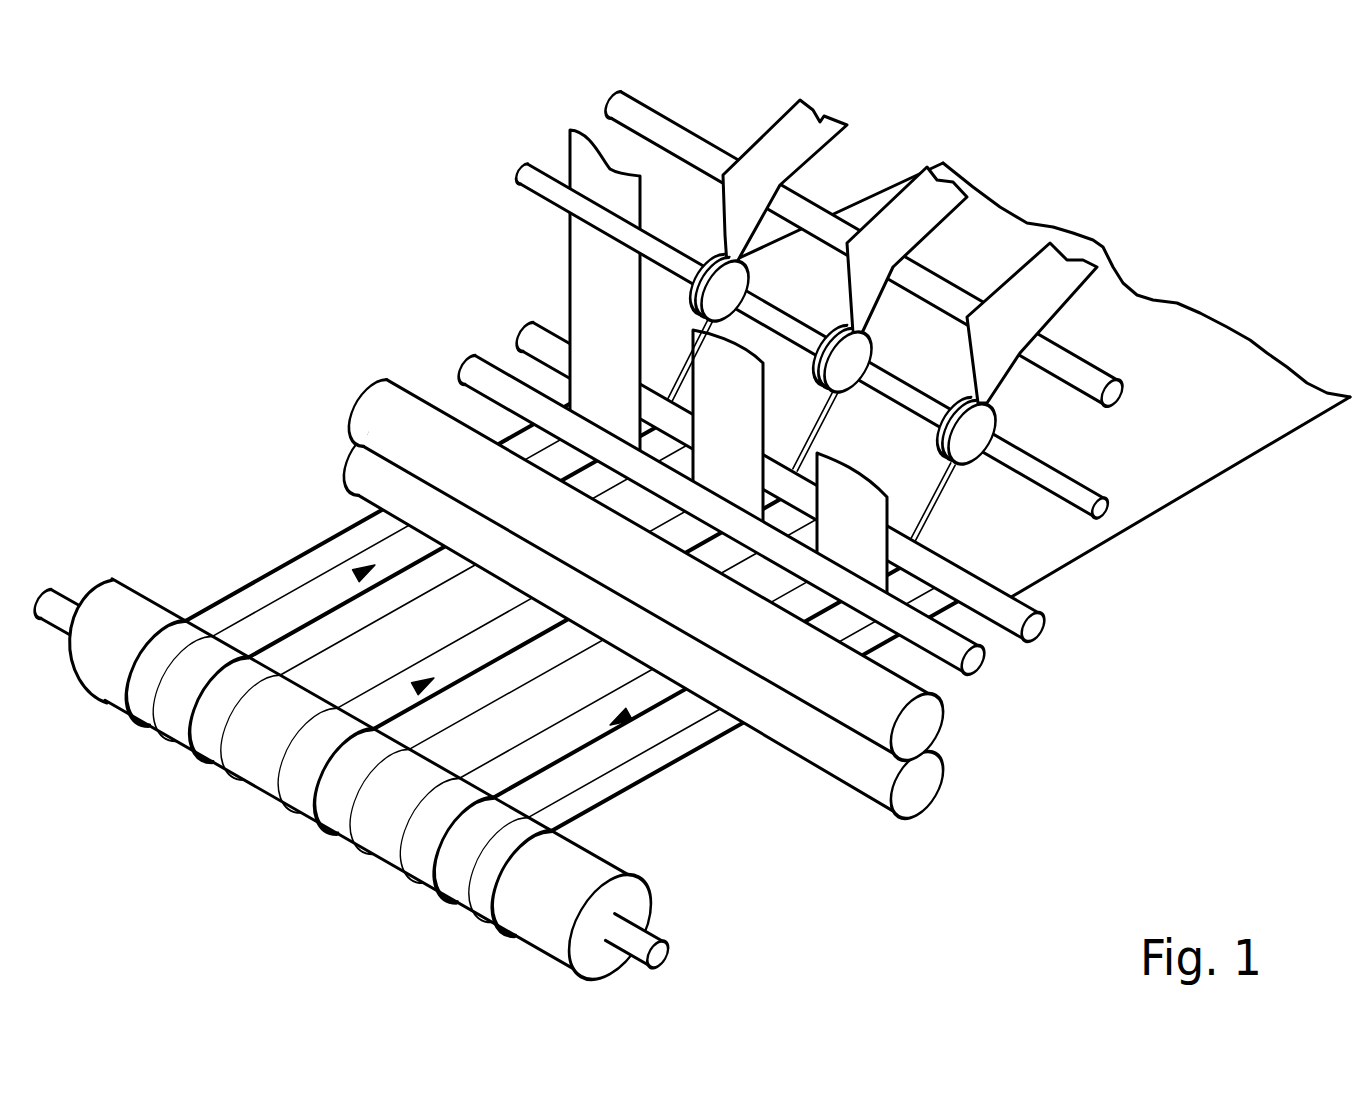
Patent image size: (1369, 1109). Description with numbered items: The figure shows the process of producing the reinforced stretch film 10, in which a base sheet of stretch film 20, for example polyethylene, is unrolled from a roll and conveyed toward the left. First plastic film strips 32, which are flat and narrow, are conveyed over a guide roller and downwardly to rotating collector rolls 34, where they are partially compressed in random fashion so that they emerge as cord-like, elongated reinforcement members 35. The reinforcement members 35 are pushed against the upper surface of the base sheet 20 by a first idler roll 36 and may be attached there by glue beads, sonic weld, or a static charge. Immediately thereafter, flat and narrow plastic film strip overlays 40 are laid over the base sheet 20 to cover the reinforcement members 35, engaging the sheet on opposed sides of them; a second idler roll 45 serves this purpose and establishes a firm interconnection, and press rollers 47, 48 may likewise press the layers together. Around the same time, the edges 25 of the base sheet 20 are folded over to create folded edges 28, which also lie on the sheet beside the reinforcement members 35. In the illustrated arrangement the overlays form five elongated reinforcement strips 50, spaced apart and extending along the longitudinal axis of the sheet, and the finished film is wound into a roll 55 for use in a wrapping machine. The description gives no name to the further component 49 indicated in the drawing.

The reinforced stretch film 10 is at (699, 530).
The base sheet of stretch film 20 is at (972, 379).
The edges of the base sheet 25 is at (856, 215).
The folded edges 28 is at (277, 580).
The first plastic film strips 32 is at (822, 120).
The rotating collector rolls 34 is at (828, 302).
The reinforcement members 35 is at (705, 388).
The first idler roll 36 is at (1037, 627).
The plastic film strip overlays 40 is at (572, 130).
The second idler roll 45 is at (973, 660).
The press roller 47 is at (923, 720).
The press roller 48 is at (917, 783).
The roller pair 49 is at (662, 600).
The reinforcement strips 50 is at (356, 576).
The roll of reinforced stretch film 55 is at (637, 893).